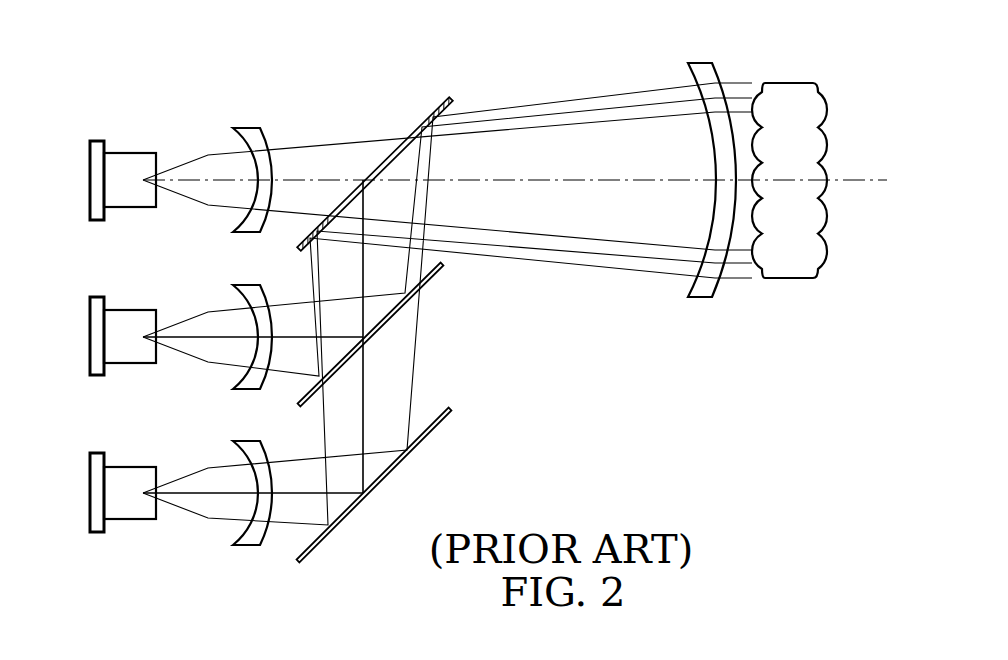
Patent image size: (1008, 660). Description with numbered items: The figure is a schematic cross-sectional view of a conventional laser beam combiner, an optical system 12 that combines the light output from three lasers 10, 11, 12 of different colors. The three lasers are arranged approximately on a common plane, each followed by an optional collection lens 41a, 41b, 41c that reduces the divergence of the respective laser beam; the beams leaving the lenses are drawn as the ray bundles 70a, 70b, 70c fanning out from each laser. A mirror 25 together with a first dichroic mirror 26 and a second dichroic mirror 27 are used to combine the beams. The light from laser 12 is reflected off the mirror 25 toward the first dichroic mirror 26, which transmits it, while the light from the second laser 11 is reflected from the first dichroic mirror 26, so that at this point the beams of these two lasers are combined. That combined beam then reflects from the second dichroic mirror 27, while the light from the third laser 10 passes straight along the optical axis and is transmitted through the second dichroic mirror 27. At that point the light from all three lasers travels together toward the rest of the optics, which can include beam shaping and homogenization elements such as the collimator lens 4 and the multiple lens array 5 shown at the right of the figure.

The collimator lens 4 is at (700, 68).
The multiple lens array 5 is at (791, 87).
The laser 10 is at (90, 182).
The laser 11 is at (90, 339).
The laser 12 is at (90, 494).
The mirror 25 is at (451, 413).
The first dichroic mirror 26 is at (440, 270).
The second dichroic mirror 27 is at (452, 99).
The collection lens 41a is at (230, 216).
The collection lens 41b is at (232, 373).
The collection lens 41c is at (236, 529).
The light beam 70a is at (173, 162).
The light beam 70b is at (173, 320).
The light beam 70c is at (170, 476).